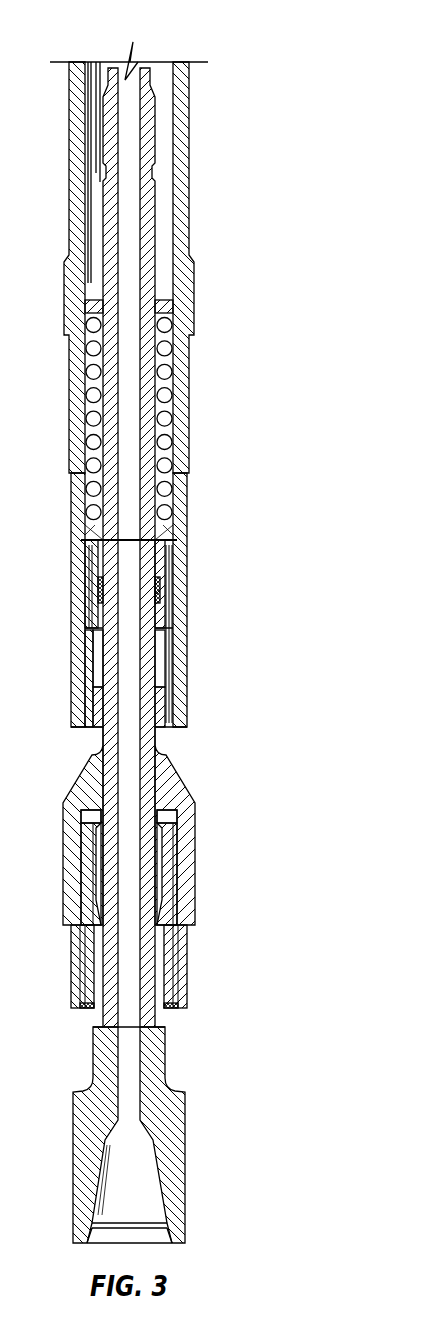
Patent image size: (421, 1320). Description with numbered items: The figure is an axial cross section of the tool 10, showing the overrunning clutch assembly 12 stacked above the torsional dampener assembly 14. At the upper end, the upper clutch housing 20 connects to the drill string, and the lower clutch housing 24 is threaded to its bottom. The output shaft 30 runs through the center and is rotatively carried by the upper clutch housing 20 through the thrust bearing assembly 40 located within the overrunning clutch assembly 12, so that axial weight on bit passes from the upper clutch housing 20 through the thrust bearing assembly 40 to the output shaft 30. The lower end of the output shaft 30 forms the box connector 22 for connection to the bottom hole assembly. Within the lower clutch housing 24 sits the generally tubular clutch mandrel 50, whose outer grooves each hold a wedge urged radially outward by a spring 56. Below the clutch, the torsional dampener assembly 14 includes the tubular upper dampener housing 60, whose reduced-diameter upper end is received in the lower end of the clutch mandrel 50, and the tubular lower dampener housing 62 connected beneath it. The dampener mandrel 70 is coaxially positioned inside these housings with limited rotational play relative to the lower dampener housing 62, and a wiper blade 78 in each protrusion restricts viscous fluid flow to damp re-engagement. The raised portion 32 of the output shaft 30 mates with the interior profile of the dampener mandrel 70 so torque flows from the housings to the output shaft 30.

The tool 10 is at (203, 33).
The overrunning clutch assembly 12 is at (63, 63).
The torsional dampener assembly 14 is at (58, 725).
The upper clutch housing 20 is at (189, 232).
The box connector 22 is at (185, 1168).
The lower clutch housing 24 is at (188, 698).
The output shaft 30 is at (155, 207).
The raised portion 32 is at (168, 873).
The thrust bearing assembly 40 is at (167, 410).
The clutch mandrel 50 is at (168, 553).
The spring 56 is at (175, 650).
The upper dampener housing 60 is at (195, 828).
The lower dampener housing 62 is at (187, 962).
The dampener mandrel 70 is at (168, 1010).
The wiper blade 78 is at (173, 1010).